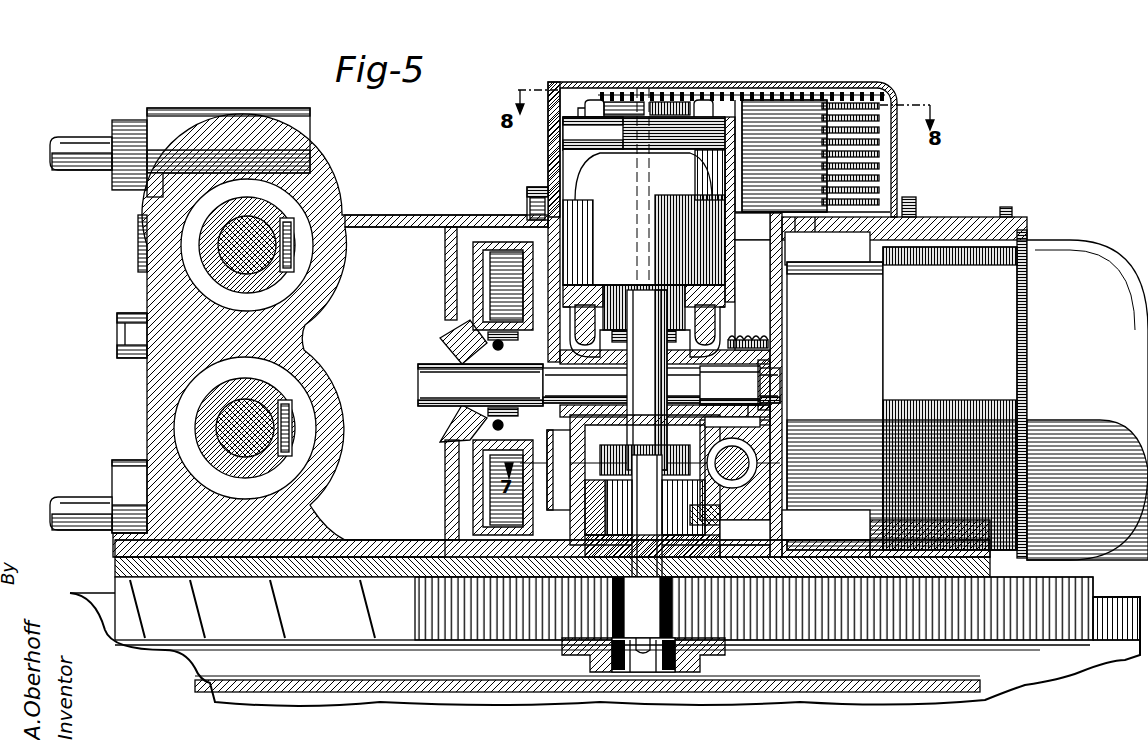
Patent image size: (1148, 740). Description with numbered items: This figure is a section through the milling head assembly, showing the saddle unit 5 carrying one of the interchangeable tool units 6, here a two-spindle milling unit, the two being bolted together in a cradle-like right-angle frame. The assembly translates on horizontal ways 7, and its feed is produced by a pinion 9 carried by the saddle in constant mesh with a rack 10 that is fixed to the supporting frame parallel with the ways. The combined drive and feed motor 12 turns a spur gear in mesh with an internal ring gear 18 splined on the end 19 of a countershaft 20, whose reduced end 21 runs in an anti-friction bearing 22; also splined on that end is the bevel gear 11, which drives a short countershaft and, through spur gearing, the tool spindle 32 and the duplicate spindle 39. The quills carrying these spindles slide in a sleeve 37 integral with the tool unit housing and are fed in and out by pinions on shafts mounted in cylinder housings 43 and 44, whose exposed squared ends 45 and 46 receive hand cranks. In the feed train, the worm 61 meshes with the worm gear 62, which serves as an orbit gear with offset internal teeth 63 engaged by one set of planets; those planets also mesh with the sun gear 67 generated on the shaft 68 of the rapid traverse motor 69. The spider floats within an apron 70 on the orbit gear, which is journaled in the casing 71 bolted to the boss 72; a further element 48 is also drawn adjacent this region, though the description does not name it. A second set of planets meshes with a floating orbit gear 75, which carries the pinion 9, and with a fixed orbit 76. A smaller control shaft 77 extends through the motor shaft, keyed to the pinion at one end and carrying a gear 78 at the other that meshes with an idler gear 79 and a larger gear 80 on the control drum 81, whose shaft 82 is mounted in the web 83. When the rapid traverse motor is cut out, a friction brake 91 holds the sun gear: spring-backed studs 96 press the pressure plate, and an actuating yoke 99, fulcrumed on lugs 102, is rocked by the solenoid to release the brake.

The saddle unit 5 is at (515, 217).
The tool unit 6 is at (463, 215).
The horizontal ways 7 is at (1104, 625).
The pinion 9 is at (642, 640).
The rack 10 is at (788, 625).
The bevel gear 11 is at (452, 332).
The combined drive and feed motor 12 is at (967, 395).
The internal ring gear 18 is at (480, 290).
The end of countershaft 19 is at (480, 385).
The countershaft 20 is at (730, 382).
The reduced end of countershaft 21 is at (766, 386).
The anti-friction bearing 22 is at (770, 405).
The tool spindle 32 is at (240, 425).
The sleeve 37 is at (165, 222).
The duplicate spindle 39 is at (245, 243).
The cylinder housing 43 is at (133, 490).
The cylinder housing 44 is at (213, 122).
The exposed shaft end 45 is at (86, 505).
The exposed shaft end 46 is at (82, 165).
The spring 48 is at (742, 338).
The worm 61 is at (775, 430).
The worm gear 62 is at (596, 490).
The offset internal teeth 63 is at (655, 476).
The sun gear 67 is at (667, 442).
The rapid traverse motor shaft 68 is at (632, 383).
The rapid traverse motor 69 is at (644, 217).
The apron 70 is at (578, 432).
The casing 71 is at (716, 420).
The boss 72 is at (742, 545).
The floating orbit gear 75 is at (698, 518).
The fixed orbit 76 is at (690, 492).
The control shaft 77 is at (645, 540).
The gear 78 is at (662, 100).
The idler gear 79 is at (705, 98).
The gear 80 is at (789, 100).
The control drum 81 is at (882, 172).
The drum shaft 82 is at (813, 232).
The web 83 is at (772, 296).
The friction brake 91 is at (580, 134).
The studs 96 is at (594, 104).
The actuating yoke 99 is at (612, 104).
The lug 102 is at (583, 108).